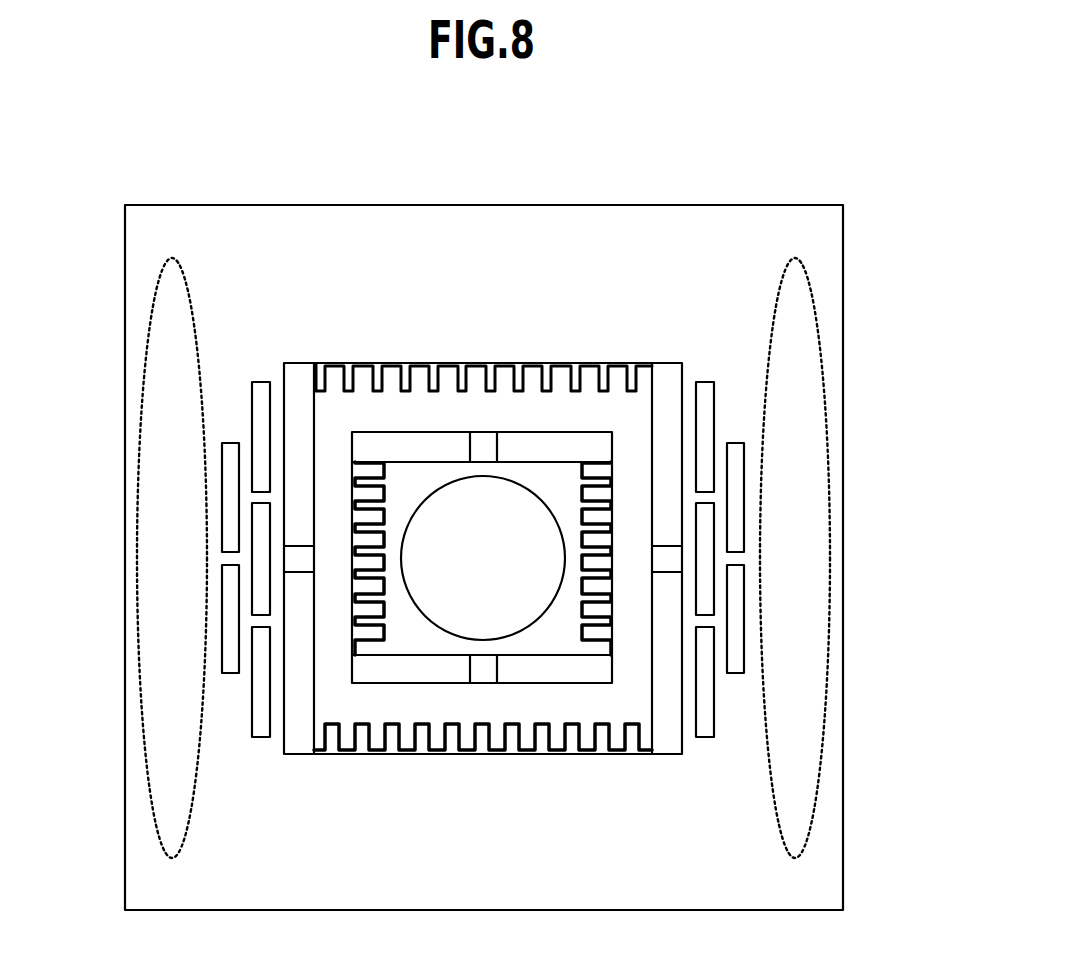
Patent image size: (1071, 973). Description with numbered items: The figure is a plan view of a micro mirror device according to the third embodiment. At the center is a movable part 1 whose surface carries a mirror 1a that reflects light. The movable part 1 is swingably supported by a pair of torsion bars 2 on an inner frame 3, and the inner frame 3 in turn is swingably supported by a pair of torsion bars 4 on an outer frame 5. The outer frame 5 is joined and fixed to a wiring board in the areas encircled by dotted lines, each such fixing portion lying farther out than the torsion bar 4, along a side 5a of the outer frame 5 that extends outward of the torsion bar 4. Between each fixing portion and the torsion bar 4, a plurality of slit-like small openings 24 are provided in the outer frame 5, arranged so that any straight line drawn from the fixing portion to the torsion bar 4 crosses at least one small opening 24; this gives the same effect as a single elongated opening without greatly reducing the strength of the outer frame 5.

The movable part 1 is at (415, 482).
The mirror 1a is at (453, 608).
The torsion bar 2 is at (497, 445).
The inner frame 3 is at (617, 695).
The torsion bar 4 is at (663, 573).
The outer frame 5 is at (812, 547).
The side of the outer frame 5a is at (125, 533).
The small openings 24 is at (258, 670).